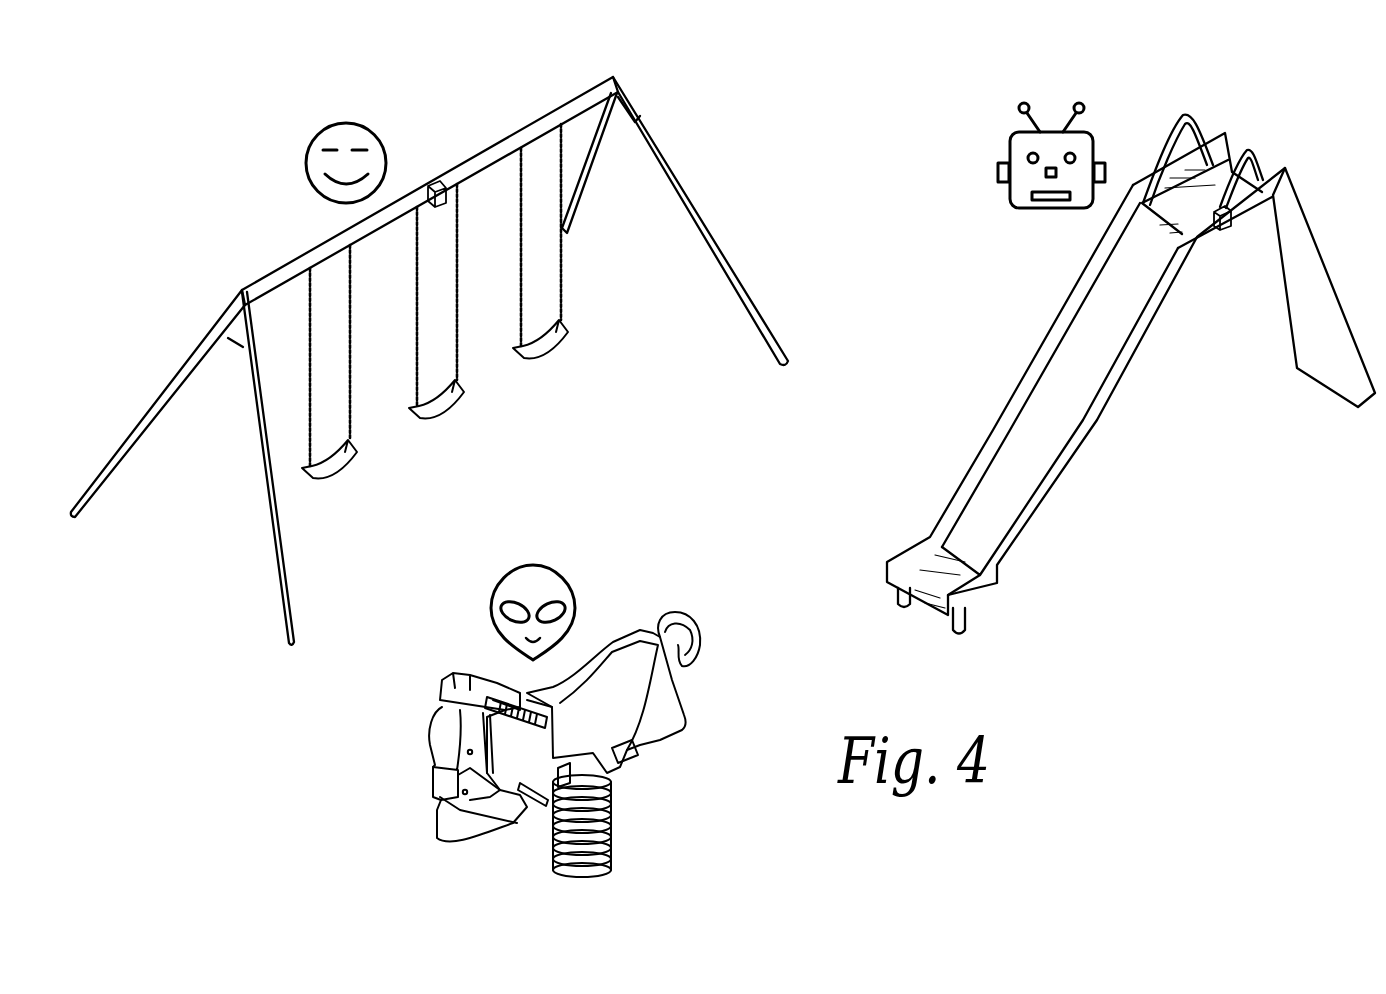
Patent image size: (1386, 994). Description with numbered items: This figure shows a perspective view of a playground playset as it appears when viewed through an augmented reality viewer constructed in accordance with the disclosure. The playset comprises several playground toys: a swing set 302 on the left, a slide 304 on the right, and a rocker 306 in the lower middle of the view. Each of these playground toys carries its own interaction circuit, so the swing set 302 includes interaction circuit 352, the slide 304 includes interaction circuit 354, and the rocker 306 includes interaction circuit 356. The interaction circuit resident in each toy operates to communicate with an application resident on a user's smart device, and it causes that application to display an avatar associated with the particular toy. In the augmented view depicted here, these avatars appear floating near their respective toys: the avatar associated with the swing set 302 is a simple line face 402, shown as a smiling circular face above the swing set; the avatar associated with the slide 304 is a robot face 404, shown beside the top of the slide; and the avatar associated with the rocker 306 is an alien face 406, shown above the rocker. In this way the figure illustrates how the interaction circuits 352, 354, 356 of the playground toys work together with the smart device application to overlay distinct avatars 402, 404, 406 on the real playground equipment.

The swing set 302 is at (667, 160).
The slide 304 is at (1300, 227).
The rocker 306 is at (435, 750).
The interaction circuit 352 is at (437, 180).
The interaction circuit 354 is at (1227, 232).
The interaction circuit 356 is at (610, 783).
The simple line face 402 is at (313, 137).
The robot face 404 is at (1013, 133).
The alien face 406 is at (567, 580).